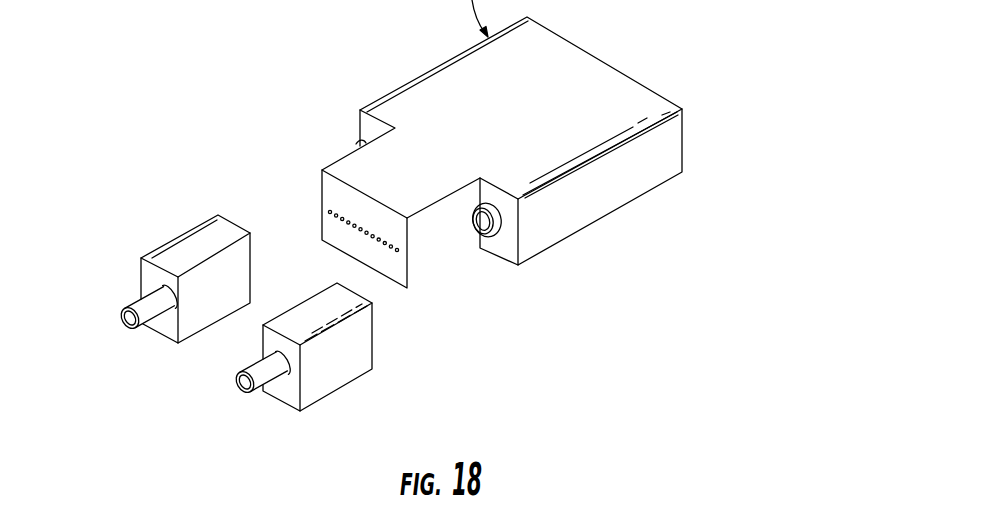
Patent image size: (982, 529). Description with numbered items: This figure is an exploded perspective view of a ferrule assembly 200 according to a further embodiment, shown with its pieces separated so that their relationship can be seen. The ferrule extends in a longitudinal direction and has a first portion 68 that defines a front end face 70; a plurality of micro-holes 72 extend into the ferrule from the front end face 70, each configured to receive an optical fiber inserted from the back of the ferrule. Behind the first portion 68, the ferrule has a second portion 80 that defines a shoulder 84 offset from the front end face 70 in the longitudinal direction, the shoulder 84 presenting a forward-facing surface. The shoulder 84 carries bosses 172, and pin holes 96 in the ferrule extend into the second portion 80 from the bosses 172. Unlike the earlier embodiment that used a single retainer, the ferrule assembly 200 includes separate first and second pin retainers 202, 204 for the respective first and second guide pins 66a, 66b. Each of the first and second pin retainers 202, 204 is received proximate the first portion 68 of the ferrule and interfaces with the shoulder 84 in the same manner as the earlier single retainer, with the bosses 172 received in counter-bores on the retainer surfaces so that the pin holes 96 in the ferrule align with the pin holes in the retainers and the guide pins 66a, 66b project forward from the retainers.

The ferrule assembly 200 is at (392, 41).
The first portion 68 is at (330, 158).
The second portion 80 is at (425, 72).
The shoulder 84 is at (360, 128).
The front end face 70 is at (394, 263).
The micro-holes 72 is at (328, 218).
The pin holes 96 is at (486, 234).
The bosses 172 is at (500, 226).
The first pin retainer 202 is at (145, 223).
The second pin retainer 204 is at (366, 382).
The first guide pin 66a is at (127, 323).
The second guide pin 66b is at (268, 385).